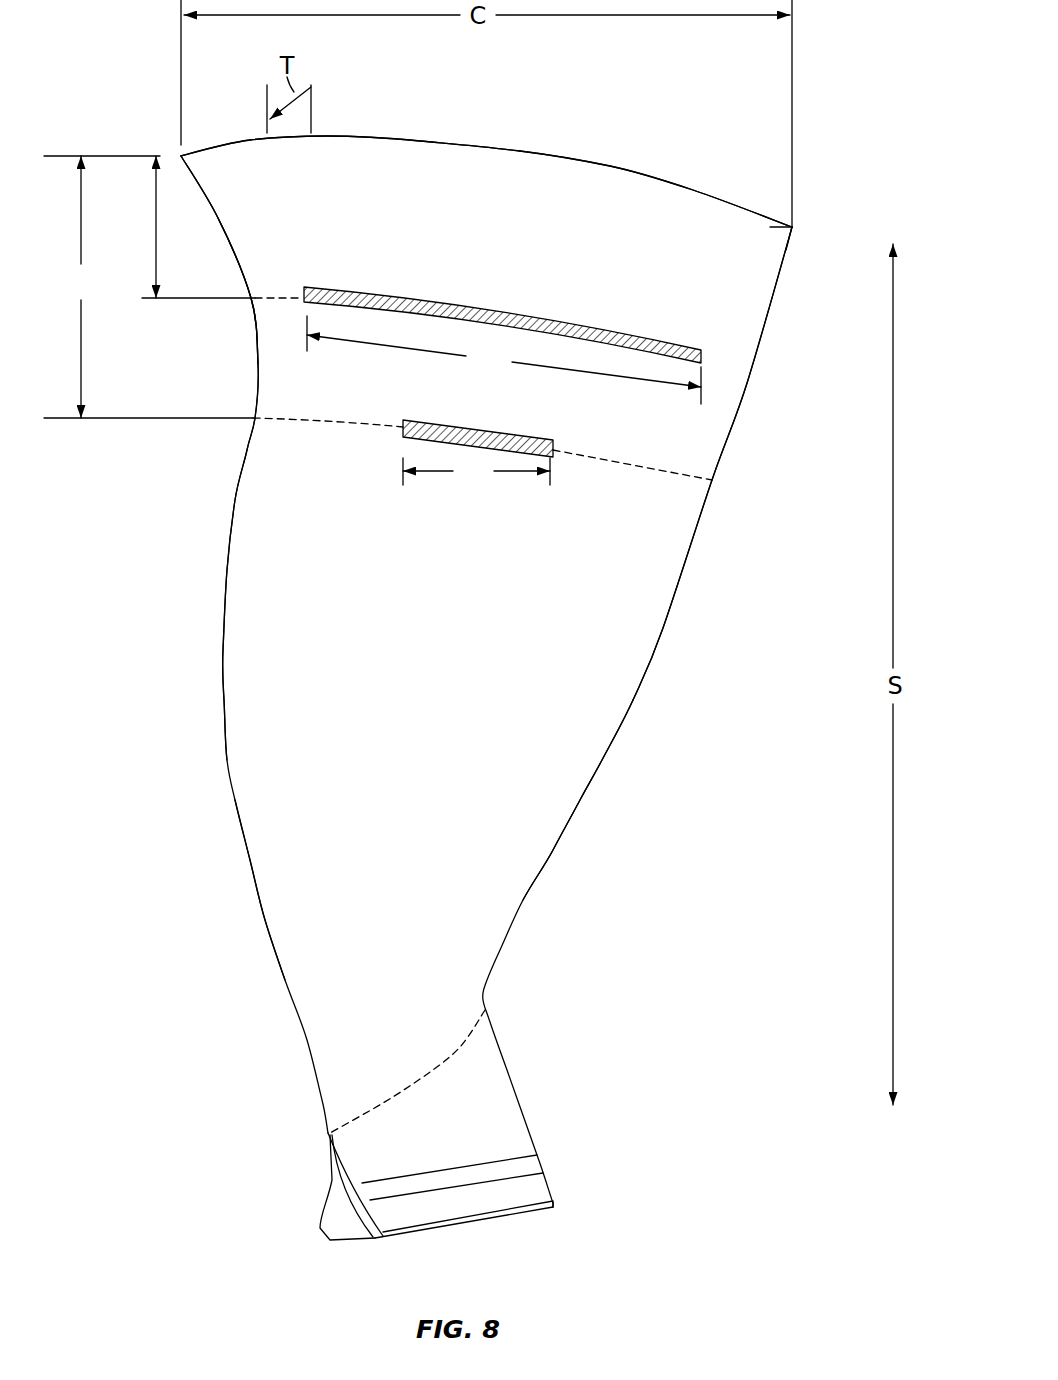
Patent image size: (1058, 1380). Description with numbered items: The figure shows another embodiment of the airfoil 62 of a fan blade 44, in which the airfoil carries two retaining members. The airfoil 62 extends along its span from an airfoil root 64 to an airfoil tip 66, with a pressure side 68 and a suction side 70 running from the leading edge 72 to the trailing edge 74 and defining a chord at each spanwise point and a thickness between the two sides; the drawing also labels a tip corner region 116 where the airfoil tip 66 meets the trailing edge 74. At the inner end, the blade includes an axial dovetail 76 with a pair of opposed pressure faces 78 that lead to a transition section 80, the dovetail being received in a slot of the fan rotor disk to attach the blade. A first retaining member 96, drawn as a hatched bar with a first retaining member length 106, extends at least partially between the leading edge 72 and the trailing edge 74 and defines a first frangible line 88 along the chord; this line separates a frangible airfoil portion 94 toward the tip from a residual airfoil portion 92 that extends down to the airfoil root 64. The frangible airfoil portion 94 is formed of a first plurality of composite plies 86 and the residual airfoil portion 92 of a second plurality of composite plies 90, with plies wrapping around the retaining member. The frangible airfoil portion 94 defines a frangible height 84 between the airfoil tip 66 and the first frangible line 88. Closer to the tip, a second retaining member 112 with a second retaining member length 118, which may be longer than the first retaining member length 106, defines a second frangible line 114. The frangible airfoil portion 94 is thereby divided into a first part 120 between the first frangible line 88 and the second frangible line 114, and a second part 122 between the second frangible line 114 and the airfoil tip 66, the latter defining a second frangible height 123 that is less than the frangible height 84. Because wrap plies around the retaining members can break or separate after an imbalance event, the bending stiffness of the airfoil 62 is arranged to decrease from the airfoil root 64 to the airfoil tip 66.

The fan blade 44 is at (640, 130).
The airfoil 62 is at (288, 888).
The airfoil root 64 is at (449, 1055).
The airfoil tip 66 is at (518, 150).
The pressure side 68 is at (429, 607).
The suction side 70 is at (275, 571).
The leading edge 72 is at (222, 750).
The trailing edge 74 is at (665, 628).
The axial dovetail 76 is at (348, 1225).
The pressure faces 78 is at (325, 1199).
The transition section 80 is at (490, 1122).
The frangible height 84 is at (148, 287).
The plurality of composite plies 86 is at (748, 480).
The frangible line 88 is at (650, 468).
The second plurality of composite plies 90 is at (708, 553).
The residual airfoil portion 92 is at (567, 763).
The frangible airfoil portion 94 is at (775, 337).
The retaining member 96 is at (540, 436).
The first retaining member length 106 is at (476, 472).
The second retaining member 112 is at (462, 287).
The second frangible line 114 is at (288, 296).
The tip trailing edge corner 116 is at (802, 245).
The second retaining member length 118 is at (504, 360).
The first part 120 is at (275, 350).
The second part 122 is at (693, 205).
The second frangible height 123 is at (156, 233).